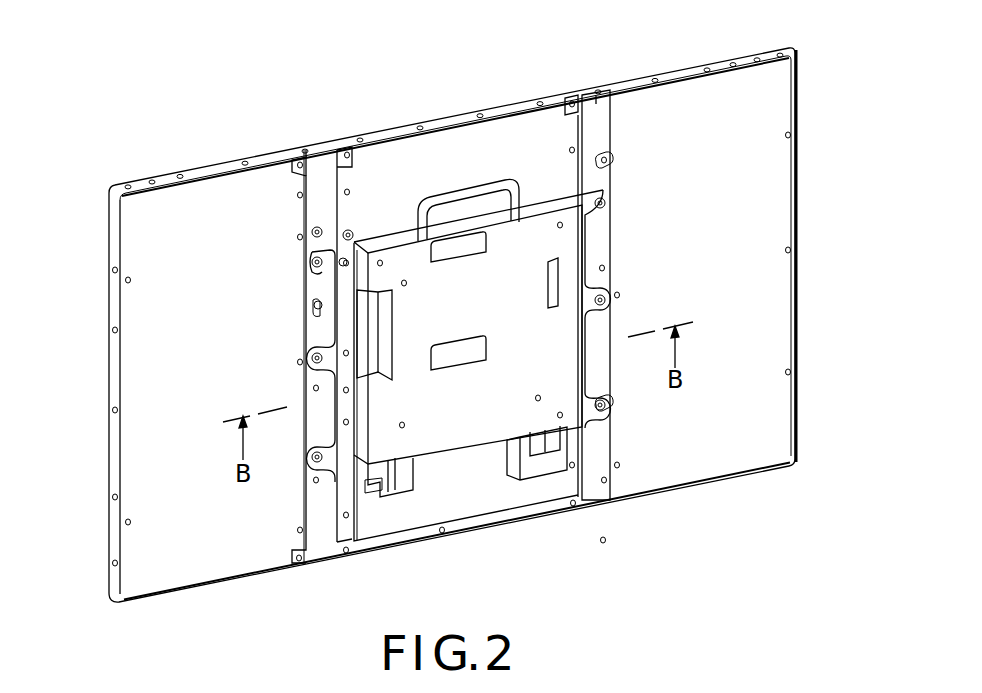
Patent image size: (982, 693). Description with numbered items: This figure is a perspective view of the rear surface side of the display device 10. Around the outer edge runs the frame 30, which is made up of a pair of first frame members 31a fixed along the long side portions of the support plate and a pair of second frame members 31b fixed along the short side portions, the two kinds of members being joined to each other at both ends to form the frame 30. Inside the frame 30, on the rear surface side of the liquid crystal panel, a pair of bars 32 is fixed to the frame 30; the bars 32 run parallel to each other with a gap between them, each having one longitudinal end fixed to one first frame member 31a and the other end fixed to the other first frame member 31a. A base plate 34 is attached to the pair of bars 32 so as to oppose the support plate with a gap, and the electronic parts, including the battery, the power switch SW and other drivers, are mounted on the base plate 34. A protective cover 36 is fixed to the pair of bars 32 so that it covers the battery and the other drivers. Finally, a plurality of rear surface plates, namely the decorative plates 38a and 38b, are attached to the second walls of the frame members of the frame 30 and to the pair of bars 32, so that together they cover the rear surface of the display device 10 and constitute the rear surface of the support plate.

The display device 10 is at (598, 60).
The frame 30 is at (216, 160).
The first frame member 31a is at (650, 75).
The second frame member 31b is at (106, 252).
The bar 32 is at (325, 548).
The base plate 34 is at (462, 497).
The protective cover 36 is at (562, 243).
The decorative plate 38a is at (400, 158).
The decorative plate 38b is at (159, 225).
The power switch SW is at (535, 478).